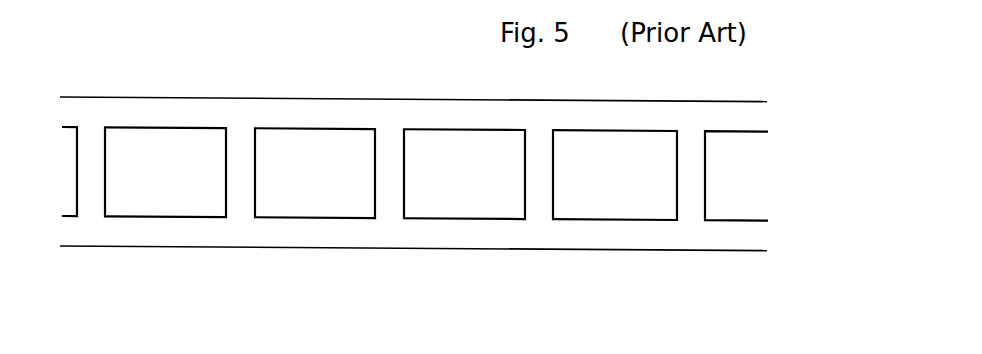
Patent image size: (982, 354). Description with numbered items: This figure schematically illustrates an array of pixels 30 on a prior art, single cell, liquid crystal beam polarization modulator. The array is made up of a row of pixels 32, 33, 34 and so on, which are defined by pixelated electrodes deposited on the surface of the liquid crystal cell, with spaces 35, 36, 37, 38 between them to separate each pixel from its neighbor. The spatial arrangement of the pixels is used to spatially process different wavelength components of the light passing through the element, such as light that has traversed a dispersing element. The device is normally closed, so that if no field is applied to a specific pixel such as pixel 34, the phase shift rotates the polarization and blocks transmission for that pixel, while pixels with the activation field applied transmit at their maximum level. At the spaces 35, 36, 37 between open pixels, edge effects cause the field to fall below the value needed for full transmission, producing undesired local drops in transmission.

The array of pixels 30 is at (783, 123).
The pixel 32 is at (175, 152).
The pixel 33 is at (313, 153).
The pixel 34 is at (478, 155).
The space between pixels 35 is at (93, 216).
The space between pixels 36 is at (247, 225).
The space between pixels 37 is at (389, 218).
The space between pixels 38 is at (538, 218).